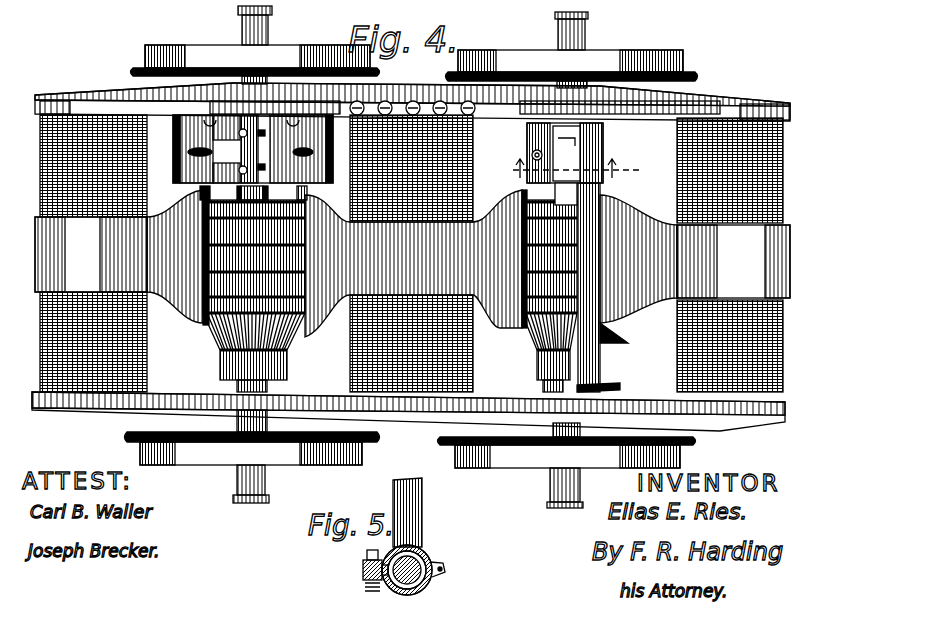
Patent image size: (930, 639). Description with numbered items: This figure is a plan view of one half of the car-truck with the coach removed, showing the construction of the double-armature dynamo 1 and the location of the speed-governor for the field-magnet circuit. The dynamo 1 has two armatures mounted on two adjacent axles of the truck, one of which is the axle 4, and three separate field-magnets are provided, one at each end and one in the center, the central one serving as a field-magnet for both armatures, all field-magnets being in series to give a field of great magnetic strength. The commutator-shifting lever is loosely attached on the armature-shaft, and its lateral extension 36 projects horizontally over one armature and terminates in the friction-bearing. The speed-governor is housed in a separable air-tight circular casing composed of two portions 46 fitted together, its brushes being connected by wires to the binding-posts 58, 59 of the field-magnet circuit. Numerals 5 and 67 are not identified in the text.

In FIG. 4, the dynamo-electric generator 1 is at (72, 259).
In FIG. 4, the axle 4 is at (247, 149).
In FIG. 5, the axle 4 is at (379, 536).
In FIG. 4, the brush-holder shaft 5 is at (258, 150).
In FIG. 4, the lateral extension 36 is at (592, 197).
In FIG. 4, the casing portions 46 is at (253, 193).
In FIG. 4, the binding-post 58 is at (211, 149).
In FIG. 4, the binding-post 59 is at (290, 148).
In FIG. 4, the bolts 67 is at (413, 101).